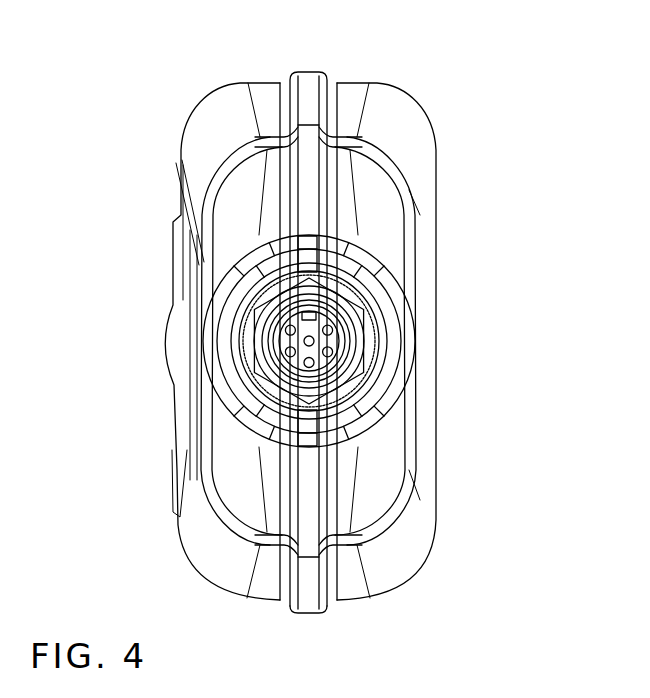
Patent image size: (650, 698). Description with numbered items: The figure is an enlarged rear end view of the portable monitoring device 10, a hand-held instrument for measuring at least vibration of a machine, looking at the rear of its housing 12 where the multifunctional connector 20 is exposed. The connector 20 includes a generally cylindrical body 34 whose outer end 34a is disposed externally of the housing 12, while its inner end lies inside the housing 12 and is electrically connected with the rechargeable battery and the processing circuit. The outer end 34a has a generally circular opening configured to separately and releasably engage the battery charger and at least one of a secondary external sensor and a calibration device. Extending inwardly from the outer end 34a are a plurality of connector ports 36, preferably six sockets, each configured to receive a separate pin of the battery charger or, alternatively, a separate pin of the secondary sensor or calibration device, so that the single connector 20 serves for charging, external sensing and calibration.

The portable monitoring device 10 is at (97, 70).
The housing 12 is at (432, 117).
The connector 20 is at (400, 365).
The cylindrical body 34 is at (252, 370).
The outer end 34a is at (323, 380).
The connector port 36 is at (290, 330).